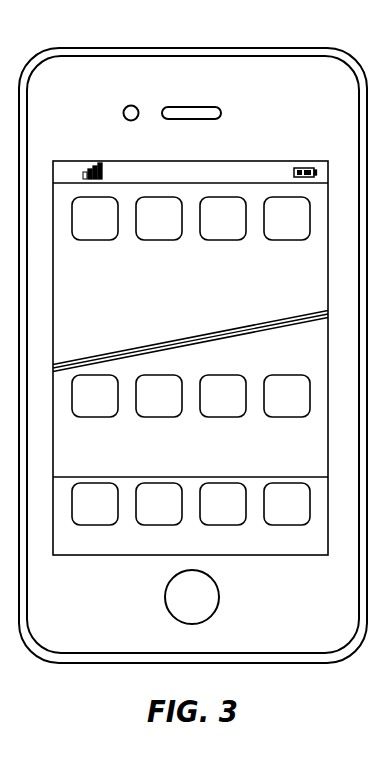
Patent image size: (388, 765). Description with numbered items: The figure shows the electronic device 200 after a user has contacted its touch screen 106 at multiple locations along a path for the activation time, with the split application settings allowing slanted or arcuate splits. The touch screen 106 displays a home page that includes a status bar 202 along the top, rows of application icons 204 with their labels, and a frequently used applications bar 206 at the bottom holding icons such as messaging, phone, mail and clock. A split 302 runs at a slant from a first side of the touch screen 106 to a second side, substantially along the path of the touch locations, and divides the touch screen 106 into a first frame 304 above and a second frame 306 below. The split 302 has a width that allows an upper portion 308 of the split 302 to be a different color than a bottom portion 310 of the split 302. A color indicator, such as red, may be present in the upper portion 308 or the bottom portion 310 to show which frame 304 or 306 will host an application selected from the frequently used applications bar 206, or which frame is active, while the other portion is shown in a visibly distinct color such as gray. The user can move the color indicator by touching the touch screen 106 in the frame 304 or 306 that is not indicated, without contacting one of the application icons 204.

The electronic device 200 is at (288, 48).
The touch screen 106 is at (72, 160).
The status bar 202 is at (262, 170).
The application icons 204 is at (182, 238).
The frequently used applications bar 206 is at (132, 485).
The split 302 is at (247, 326).
The first frame 304 is at (128, 320).
The second frame 306 is at (282, 469).
The upper portion of the split 308 is at (133, 349).
The bottom portion of the split 310 is at (181, 347).